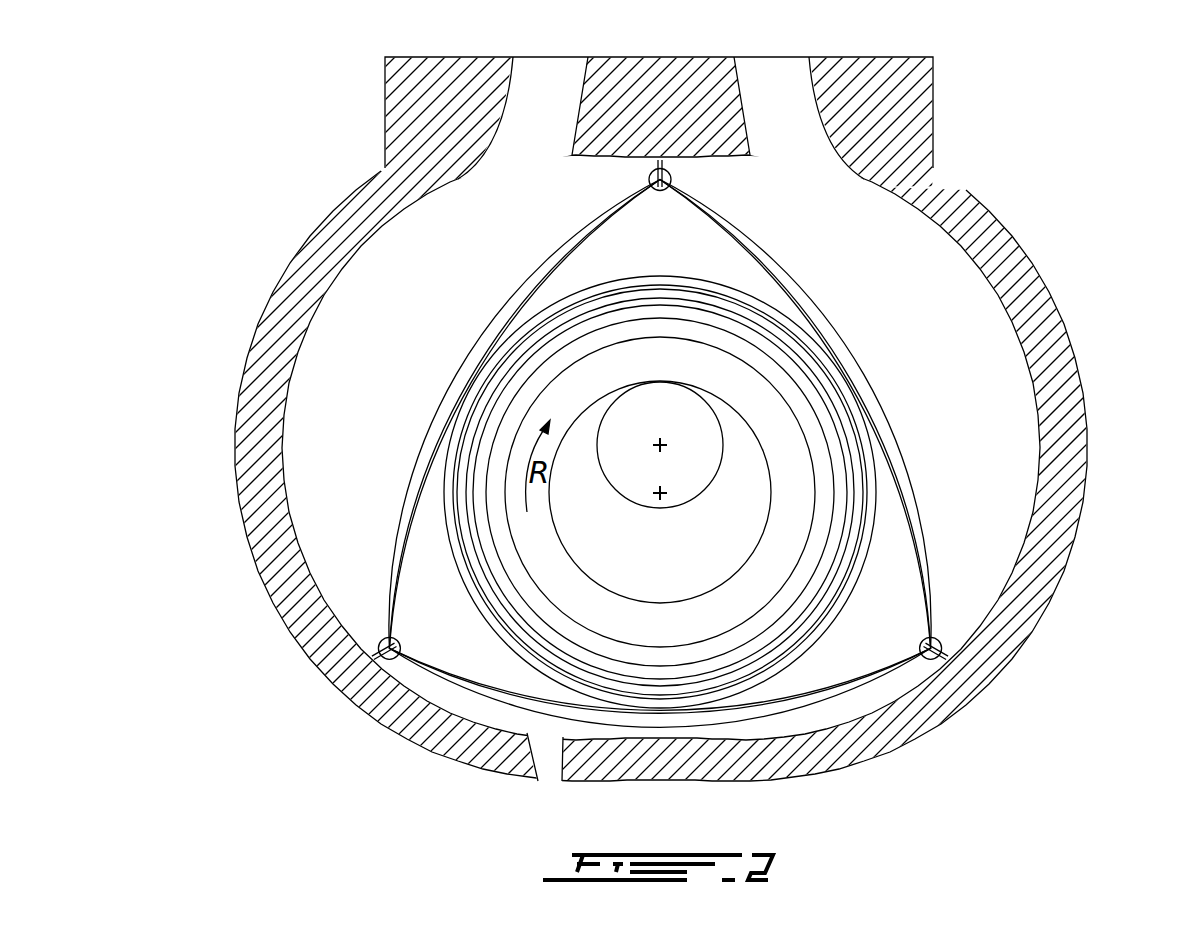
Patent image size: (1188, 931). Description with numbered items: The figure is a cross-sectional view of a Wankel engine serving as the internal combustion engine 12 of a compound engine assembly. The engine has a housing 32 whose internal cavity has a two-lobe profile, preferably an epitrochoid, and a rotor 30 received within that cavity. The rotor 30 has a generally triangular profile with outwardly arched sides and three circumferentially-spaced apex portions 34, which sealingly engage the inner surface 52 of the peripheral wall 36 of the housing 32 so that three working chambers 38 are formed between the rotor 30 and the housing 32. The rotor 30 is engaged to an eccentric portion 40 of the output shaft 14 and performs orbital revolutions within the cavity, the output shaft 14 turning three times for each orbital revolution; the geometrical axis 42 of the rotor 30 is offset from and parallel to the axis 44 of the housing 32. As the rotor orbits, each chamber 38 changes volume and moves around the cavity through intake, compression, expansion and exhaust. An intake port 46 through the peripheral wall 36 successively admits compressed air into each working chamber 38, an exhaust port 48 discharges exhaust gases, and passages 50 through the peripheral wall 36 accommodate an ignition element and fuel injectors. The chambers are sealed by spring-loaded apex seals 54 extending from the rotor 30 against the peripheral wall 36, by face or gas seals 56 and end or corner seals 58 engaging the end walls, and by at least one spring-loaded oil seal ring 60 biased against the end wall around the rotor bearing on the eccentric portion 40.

The internal combustion engine 12 is at (300, 165).
The output shaft 14 is at (688, 478).
The rotor 30 is at (686, 454).
The housing 32 is at (594, 441).
The apex portion 34 is at (950, 665).
The peripheral wall 36 is at (1043, 322).
The working chamber 38 is at (358, 366).
The eccentric portion 40 is at (663, 547).
The geometrical axis of the rotor 42 is at (658, 494).
The axis of the housing 44 is at (656, 446).
The intake port 46 is at (785, 130).
The exhaust port 48 is at (537, 130).
The passage 50 is at (548, 762).
The inner surface of housing 52 is at (1008, 508).
The apex seal 54 is at (372, 660).
The face or gas seal 56 is at (400, 556).
The end or corner seal 58 is at (388, 647).
The oil seal ring 60 is at (798, 700).